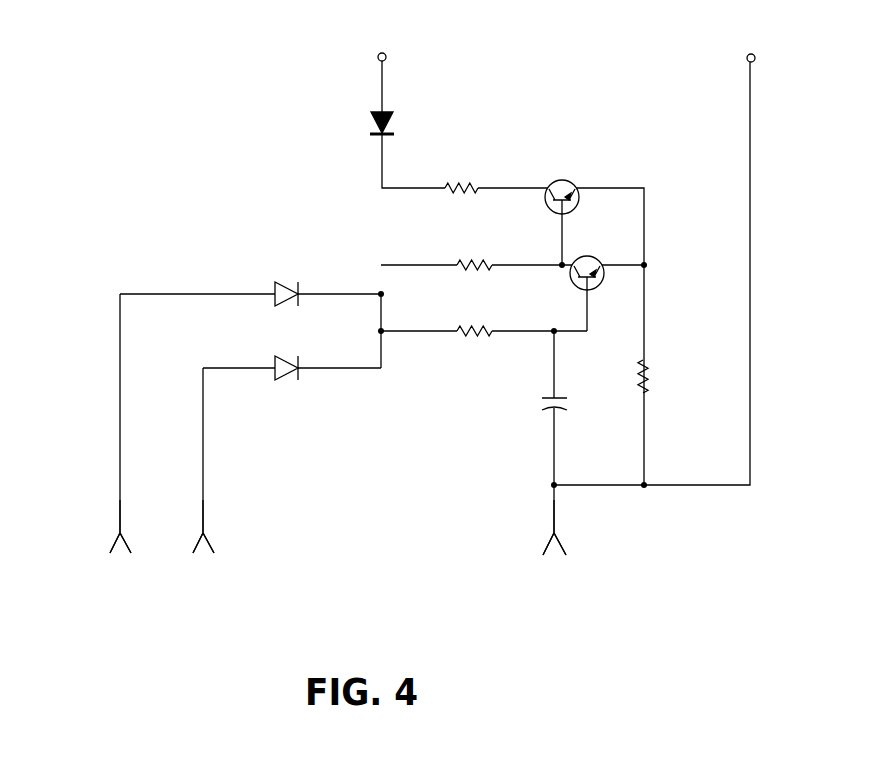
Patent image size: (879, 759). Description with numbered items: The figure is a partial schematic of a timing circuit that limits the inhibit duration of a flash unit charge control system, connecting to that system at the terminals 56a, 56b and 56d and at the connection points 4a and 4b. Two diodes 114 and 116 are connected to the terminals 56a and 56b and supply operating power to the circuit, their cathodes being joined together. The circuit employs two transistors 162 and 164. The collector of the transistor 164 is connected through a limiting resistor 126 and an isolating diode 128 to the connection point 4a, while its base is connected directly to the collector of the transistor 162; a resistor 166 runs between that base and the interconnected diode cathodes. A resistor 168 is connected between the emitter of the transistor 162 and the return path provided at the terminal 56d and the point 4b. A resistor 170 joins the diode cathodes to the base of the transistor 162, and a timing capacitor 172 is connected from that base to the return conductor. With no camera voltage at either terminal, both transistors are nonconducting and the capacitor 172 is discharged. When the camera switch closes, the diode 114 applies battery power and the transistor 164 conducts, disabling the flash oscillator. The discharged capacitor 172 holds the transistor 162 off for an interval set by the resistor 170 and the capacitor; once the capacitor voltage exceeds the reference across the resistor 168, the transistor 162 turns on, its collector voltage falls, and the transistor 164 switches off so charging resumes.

The connection point 4a is at (386, 58).
The connection point 4b is at (755, 59).
The isolating diode 128 is at (393, 120).
The limiting resistor 126 is at (451, 186).
The transistor 164 is at (553, 183).
The transistor 162 is at (592, 258).
The resistor 166 is at (475, 262).
The resistor 170 is at (488, 335).
The resistor 168 is at (646, 387).
The timing capacitor 172 is at (545, 411).
The diode 114 is at (283, 286).
The diode 116 is at (288, 380).
The terminal 56a is at (118, 541).
The terminal 56b is at (208, 541).
The terminal 56d is at (562, 545).